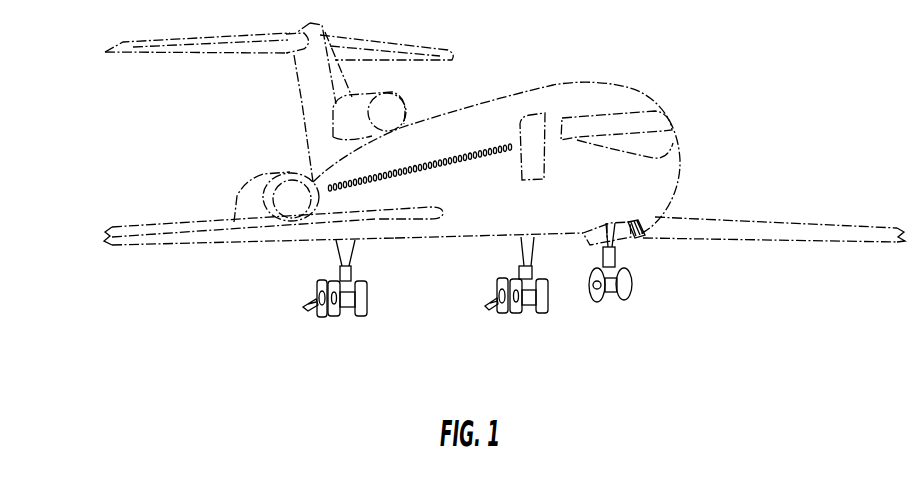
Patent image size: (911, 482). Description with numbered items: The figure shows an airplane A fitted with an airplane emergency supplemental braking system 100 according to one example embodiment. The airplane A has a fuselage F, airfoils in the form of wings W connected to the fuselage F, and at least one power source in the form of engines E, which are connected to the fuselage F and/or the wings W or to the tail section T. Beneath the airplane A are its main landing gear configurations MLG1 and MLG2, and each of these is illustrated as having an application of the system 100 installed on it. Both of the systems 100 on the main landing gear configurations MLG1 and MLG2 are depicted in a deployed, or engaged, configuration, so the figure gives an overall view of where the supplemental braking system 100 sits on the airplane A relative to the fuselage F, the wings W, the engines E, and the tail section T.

The airplane A is at (692, 92).
The tail section T is at (286, 100).
The engine E is at (226, 196).
The wing W is at (768, 207).
The fuselage F is at (457, 250).
The first main landing gear configuration MLG1 is at (317, 286).
The second main landing gear configuration MLG2 is at (549, 300).
The airplane emergency supplemental braking system 100 is at (312, 323).